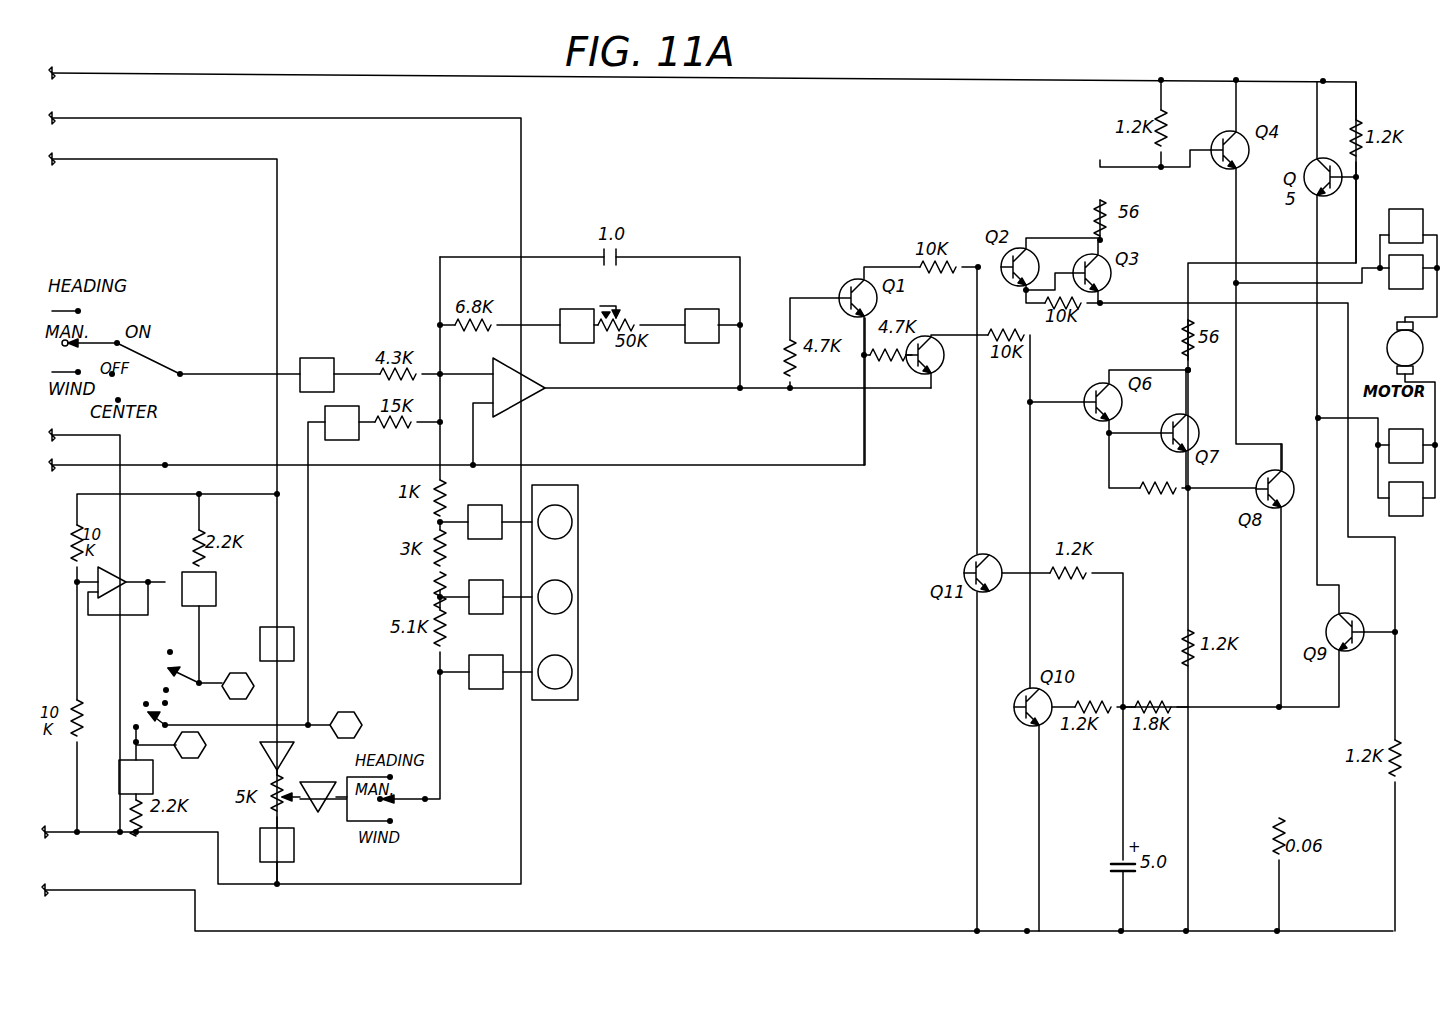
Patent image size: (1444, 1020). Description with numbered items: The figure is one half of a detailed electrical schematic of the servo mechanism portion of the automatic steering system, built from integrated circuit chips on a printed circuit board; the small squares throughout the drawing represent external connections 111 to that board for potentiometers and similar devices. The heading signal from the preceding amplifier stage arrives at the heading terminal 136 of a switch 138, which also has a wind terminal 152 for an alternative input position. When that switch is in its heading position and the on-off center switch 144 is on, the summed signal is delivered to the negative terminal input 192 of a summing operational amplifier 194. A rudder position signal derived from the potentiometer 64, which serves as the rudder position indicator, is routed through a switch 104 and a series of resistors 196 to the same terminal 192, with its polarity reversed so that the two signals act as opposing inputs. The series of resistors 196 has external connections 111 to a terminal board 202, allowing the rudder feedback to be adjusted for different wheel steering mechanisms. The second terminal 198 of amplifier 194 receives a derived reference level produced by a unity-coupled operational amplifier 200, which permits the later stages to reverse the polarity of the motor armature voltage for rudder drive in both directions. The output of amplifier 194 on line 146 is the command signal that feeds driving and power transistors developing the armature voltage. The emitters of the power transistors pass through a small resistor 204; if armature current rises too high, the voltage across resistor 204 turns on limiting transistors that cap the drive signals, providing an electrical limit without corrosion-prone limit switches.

The potentiometer 64 is at (280, 778).
The switch 104 is at (400, 806).
The external connections 111 is at (335, 342).
The heading terminal 136 is at (84, 311).
The switch 138 is at (112, 328).
The on-off center switch 144 is at (130, 358).
The line 146 is at (607, 388).
The wind input terminal 152 is at (90, 370).
The negative terminal input 192 is at (462, 372).
The summing operational amplifier 194 is at (538, 354).
The series of resistors 196 is at (497, 566).
The second terminal 198 is at (473, 438).
The unity-coupled operational amplifier 200 is at (121, 582).
The terminal board 202 is at (580, 506).
The 0.06 ohm resistor 204 is at (1278, 824).